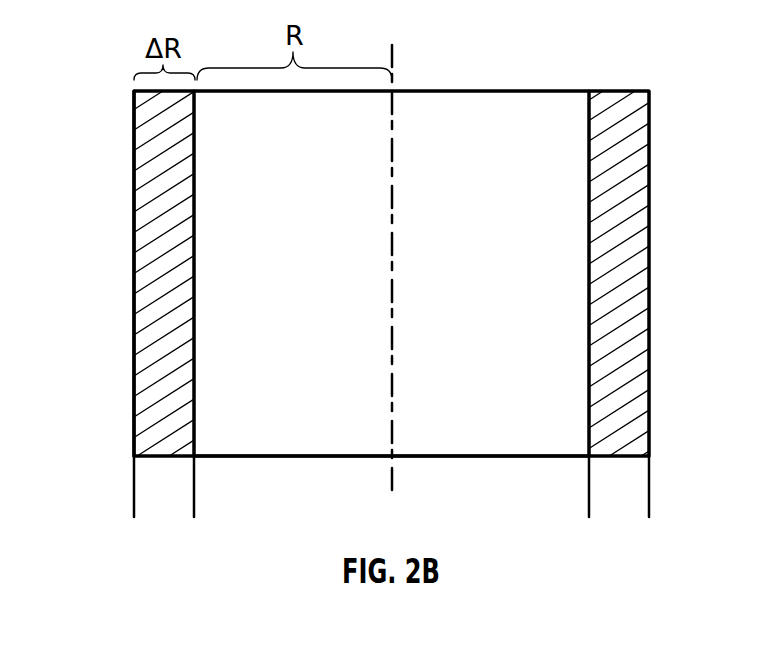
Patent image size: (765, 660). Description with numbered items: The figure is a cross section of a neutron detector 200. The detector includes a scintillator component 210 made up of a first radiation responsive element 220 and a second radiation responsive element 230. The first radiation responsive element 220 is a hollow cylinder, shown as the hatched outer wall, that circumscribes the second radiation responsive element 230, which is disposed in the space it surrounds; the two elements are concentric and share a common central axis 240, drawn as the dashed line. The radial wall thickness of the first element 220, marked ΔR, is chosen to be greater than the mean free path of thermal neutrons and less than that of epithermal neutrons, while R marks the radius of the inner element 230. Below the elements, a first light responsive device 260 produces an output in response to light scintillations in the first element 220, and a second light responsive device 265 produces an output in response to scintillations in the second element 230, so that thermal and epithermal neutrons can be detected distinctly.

The neutron detector 200 is at (506, 70).
The scintillator component 210 is at (127, 92).
The first radiation responsive element 220 is at (187, 286).
The second radiation responsive element 230 is at (304, 286).
The central axis 240 is at (392, 72).
The first light responsive device 260 is at (187, 499).
The second light responsive device 265 is at (304, 498).